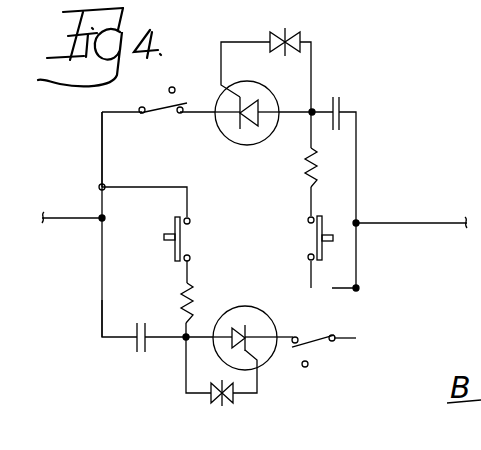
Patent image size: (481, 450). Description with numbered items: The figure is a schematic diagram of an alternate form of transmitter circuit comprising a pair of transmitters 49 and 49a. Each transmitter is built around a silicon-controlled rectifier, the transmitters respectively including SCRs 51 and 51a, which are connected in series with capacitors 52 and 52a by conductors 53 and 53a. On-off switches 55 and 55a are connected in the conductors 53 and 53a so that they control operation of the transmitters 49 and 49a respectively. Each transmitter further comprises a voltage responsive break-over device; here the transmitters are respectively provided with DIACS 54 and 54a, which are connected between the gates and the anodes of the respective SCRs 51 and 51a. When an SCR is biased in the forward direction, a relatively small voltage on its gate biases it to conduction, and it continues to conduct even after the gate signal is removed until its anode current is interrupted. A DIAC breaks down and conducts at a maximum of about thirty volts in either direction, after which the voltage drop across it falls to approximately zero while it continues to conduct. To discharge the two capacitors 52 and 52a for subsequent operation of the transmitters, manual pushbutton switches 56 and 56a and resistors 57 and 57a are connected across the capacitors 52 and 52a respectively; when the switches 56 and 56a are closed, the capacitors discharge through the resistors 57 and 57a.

The transmitter 49 is at (358, 80).
The transmitter 49a is at (375, 310).
The silicon-controlled rectifier 51 is at (255, 145).
The silicon-controlled rectifier 51a is at (248, 306).
The capacitor 52 is at (340, 94).
The capacitor 52a is at (144, 354).
The conductor 53 is at (118, 111).
The conductor 53a is at (119, 334).
The DIAC 54 is at (280, 36).
The DIAC 54a is at (234, 400).
The on-off switch 55 is at (151, 116).
The on-off switch 55a is at (318, 350).
The manual pushbutton switch 56 is at (313, 227).
The manual pushbutton switch 56a is at (183, 240).
The resistor 57 is at (315, 167).
The resistor 57a is at (184, 292).